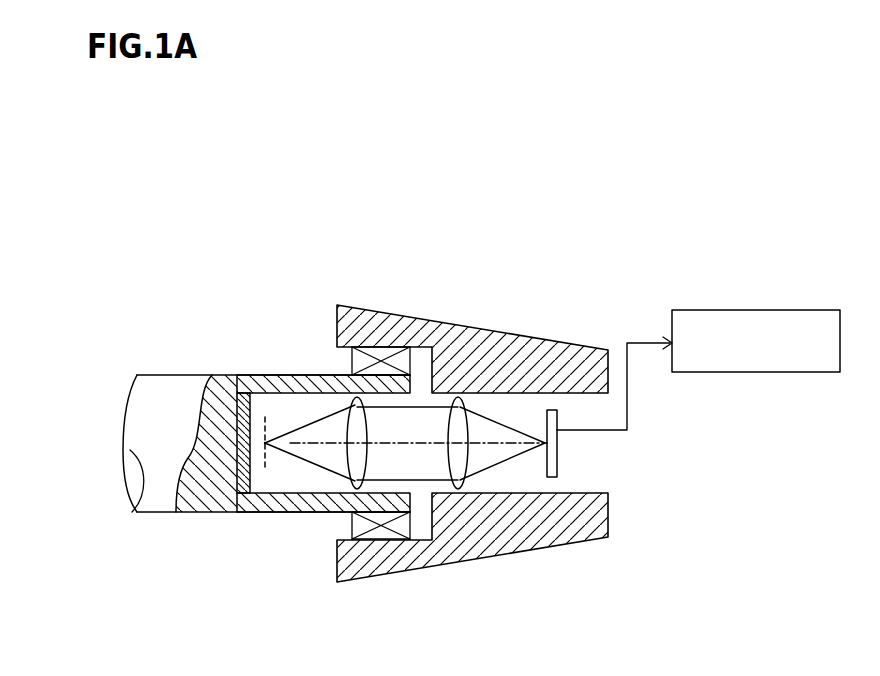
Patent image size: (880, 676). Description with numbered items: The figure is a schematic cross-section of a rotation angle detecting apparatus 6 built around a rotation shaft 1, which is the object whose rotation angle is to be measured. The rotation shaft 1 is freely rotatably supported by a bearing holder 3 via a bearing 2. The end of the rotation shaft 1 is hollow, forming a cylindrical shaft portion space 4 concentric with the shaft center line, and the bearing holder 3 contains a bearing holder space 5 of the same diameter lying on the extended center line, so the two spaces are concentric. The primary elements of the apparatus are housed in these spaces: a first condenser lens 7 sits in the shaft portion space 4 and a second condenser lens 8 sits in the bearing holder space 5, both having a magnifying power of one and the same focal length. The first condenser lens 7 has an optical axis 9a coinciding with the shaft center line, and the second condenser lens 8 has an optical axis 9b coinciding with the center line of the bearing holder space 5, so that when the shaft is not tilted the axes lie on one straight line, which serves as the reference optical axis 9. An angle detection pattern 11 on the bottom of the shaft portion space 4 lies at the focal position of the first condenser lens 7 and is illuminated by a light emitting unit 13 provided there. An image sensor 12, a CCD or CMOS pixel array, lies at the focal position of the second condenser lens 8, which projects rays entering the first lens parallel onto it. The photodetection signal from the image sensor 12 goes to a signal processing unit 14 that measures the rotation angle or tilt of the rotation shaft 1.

The rotation shaft 1 is at (167, 375).
The bearing 2 is at (418, 440).
The bearing holder 3 is at (415, 313).
The shaft portion space 4 is at (290, 478).
The bearing holder space 5 is at (507, 413).
The rotation angle detecting apparatus 6 is at (320, 318).
The first condenser lens 7 is at (347, 432).
The second condenser lens 8 is at (470, 457).
The optical axis 9 is at (460, 395).
The optical axis 9a is at (305, 458).
The optical axis 9b is at (478, 452).
The angle detection pattern 11 is at (273, 425).
The image sensor 12 is at (547, 430).
The light emitting unit 13 is at (250, 476).
The signal processing unit 14 is at (717, 310).